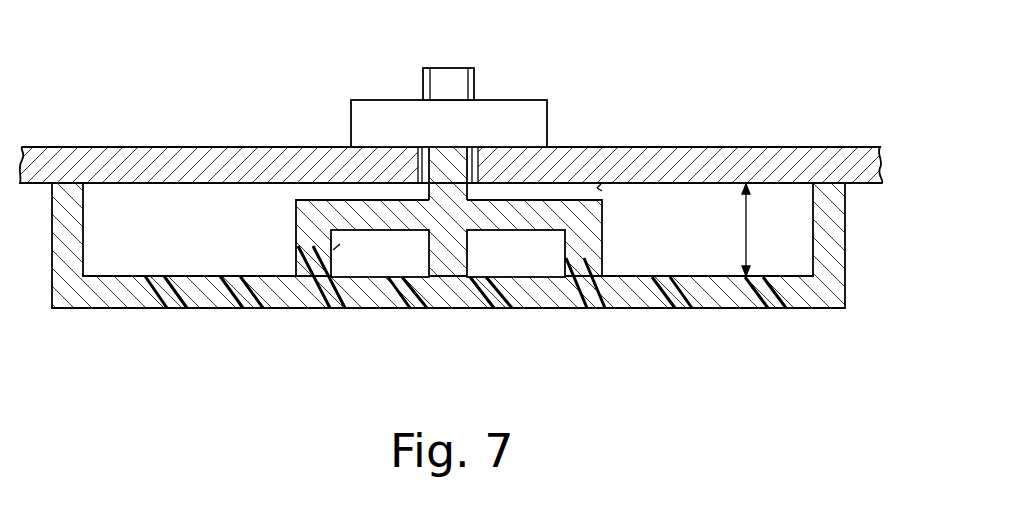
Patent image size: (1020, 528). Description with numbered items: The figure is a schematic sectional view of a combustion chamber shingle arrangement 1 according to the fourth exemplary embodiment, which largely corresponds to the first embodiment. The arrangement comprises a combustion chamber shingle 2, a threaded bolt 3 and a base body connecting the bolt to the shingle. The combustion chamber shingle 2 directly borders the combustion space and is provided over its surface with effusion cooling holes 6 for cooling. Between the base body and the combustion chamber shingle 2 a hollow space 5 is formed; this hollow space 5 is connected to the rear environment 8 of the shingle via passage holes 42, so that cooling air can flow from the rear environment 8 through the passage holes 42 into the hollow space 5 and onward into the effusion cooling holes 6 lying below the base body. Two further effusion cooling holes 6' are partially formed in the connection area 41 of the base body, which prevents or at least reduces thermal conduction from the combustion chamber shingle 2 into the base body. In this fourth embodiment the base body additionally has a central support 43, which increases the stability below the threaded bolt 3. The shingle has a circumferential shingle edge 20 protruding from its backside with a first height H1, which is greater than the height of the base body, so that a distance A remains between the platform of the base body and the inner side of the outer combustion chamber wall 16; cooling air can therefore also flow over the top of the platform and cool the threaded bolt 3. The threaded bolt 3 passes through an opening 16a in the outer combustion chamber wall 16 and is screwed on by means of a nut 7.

The combustion chamber shingle arrangement 1 is at (136, 102).
The combustion chamber shingle 2 is at (622, 296).
The threaded bolt 3 is at (455, 86).
The hollow space 5 is at (341, 251).
The effusion cooling holes 6 is at (465, 334).
The effusion cooling holes 6' is at (462, 319).
The nut 7 is at (390, 116).
The rear environment 8 is at (128, 240).
The outer combustion chamber wall 16 is at (725, 172).
The opening 16a is at (416, 170).
The shingle edge 20 is at (828, 240).
The connection area 41 is at (313, 228).
The passage holes 42 is at (333, 250).
The central support 43 is at (448, 252).
The distance A is at (597, 188).
The first height H1 is at (765, 230).